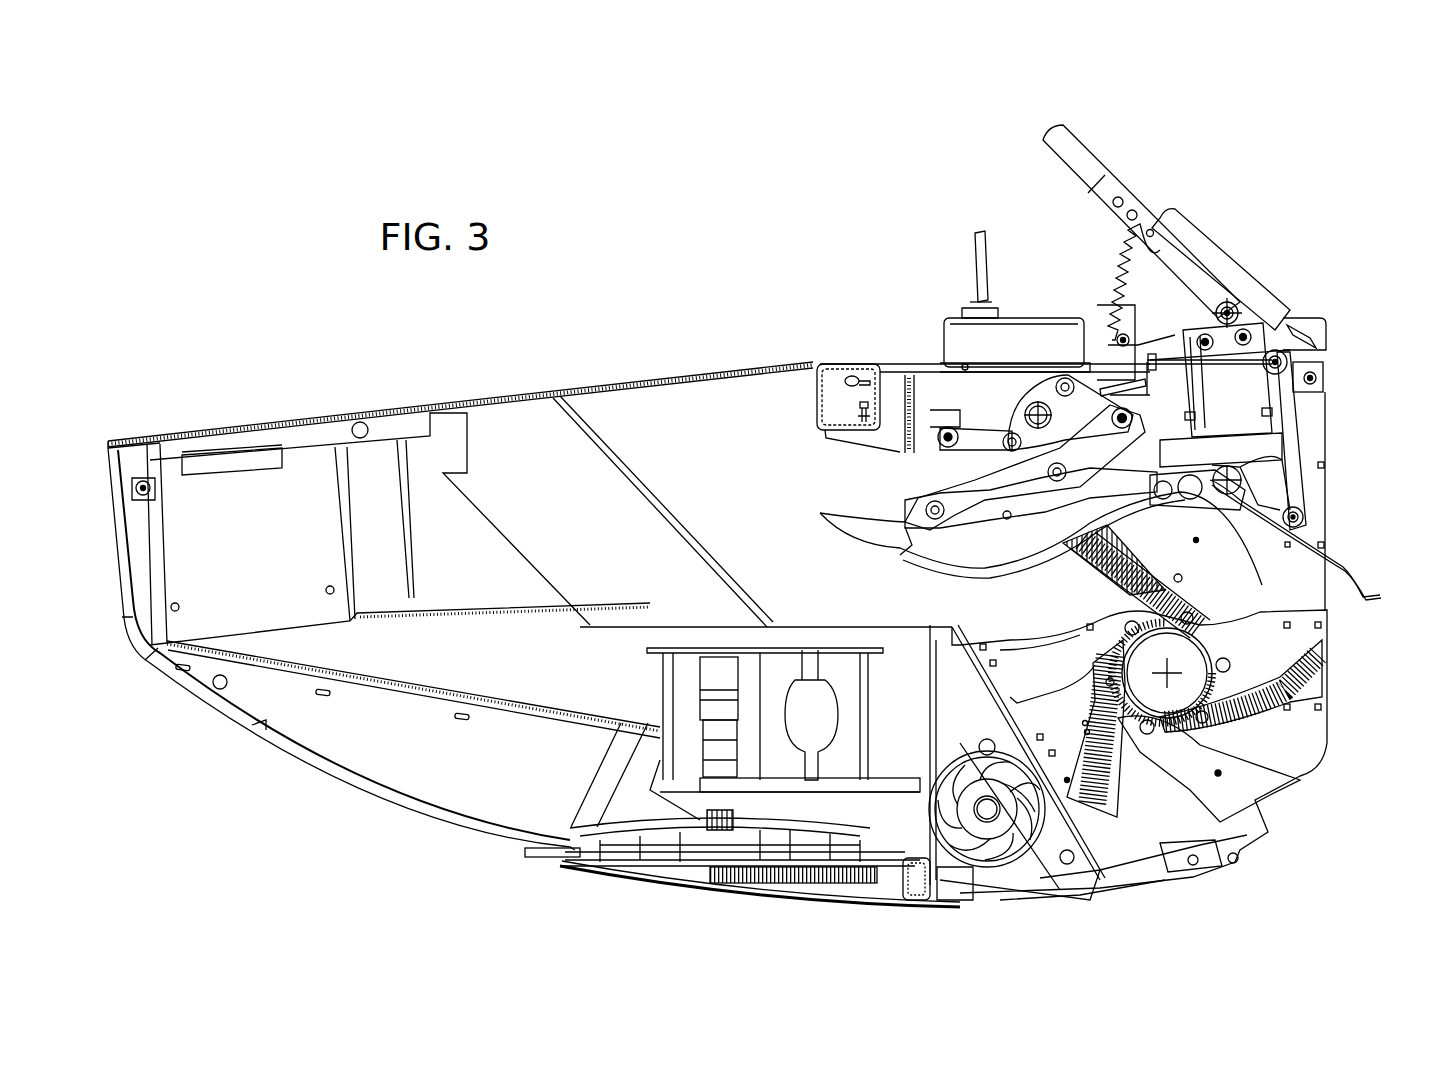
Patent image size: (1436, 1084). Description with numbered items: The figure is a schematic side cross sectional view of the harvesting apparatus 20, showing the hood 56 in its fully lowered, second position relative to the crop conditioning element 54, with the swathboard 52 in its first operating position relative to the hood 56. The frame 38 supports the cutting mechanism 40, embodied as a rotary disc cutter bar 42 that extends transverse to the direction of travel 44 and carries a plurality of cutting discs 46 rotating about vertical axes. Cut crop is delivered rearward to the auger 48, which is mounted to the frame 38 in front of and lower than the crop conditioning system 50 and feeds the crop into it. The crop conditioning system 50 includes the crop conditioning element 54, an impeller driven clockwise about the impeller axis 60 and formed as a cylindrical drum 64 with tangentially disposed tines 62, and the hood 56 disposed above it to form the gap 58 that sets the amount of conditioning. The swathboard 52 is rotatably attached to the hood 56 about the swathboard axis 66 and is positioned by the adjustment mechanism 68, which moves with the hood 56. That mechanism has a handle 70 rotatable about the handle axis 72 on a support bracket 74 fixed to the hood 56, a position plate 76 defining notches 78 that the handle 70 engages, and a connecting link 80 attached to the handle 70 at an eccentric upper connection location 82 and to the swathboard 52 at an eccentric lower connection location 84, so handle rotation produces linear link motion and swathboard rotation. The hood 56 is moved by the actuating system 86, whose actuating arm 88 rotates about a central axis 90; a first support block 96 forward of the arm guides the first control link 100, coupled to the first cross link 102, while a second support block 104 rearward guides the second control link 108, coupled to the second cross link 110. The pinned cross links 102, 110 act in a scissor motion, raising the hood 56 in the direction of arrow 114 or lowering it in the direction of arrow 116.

The harvesting apparatus 20 is at (1243, 88).
The frame 38 is at (640, 378).
The cutting mechanism 40 is at (522, 877).
The cutter bar 42 is at (600, 880).
The direction of travel 44 is at (140, 825).
The cutting discs 46 is at (640, 812).
The auger 48 is at (1010, 900).
The crop conditioning system 50 is at (858, 590).
The swathboard 52 is at (1340, 567).
The crop conditioning element 54 is at (1253, 613).
The hood 56 is at (1123, 533).
The gap 58 is at (1078, 523).
The impeller axis 60 is at (1187, 673).
The tines 62 is at (1293, 677).
The cylindrical drum 64 is at (1160, 720).
The swathboard axis 66 is at (1277, 470).
The adjustment mechanism 68 is at (1310, 300).
The handle 70 is at (1065, 147).
The handle axis 72 is at (1247, 300).
The support bracket 74 is at (1265, 370).
The position plate 76 is at (1187, 237).
The notches 78 is at (1140, 260).
The connecting link 80 is at (1280, 400).
The upper connection location 82 is at (1300, 343).
The lower connection location 84 is at (1297, 510).
The actuating system 86 is at (1020, 392).
The actuating arm 88 is at (1017, 417).
The central axis 90 is at (1030, 403).
The first support block 96 is at (933, 410).
The first control link 100 is at (957, 403).
The first cross link 102 is at (1000, 470).
The second support block 104 is at (1125, 385).
The second control link 108 is at (1107, 365).
The second cross link 110 is at (1000, 490).
The arrow 114 is at (772, 466).
The arrow 116 is at (796, 482).